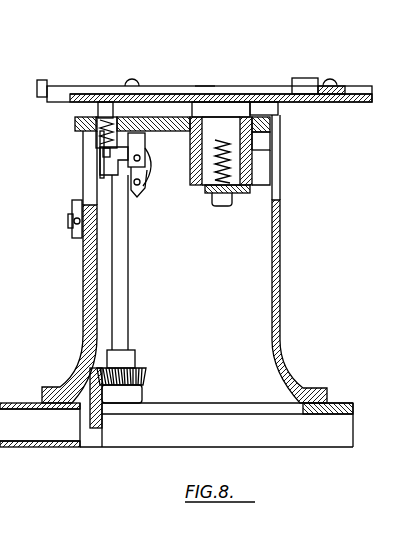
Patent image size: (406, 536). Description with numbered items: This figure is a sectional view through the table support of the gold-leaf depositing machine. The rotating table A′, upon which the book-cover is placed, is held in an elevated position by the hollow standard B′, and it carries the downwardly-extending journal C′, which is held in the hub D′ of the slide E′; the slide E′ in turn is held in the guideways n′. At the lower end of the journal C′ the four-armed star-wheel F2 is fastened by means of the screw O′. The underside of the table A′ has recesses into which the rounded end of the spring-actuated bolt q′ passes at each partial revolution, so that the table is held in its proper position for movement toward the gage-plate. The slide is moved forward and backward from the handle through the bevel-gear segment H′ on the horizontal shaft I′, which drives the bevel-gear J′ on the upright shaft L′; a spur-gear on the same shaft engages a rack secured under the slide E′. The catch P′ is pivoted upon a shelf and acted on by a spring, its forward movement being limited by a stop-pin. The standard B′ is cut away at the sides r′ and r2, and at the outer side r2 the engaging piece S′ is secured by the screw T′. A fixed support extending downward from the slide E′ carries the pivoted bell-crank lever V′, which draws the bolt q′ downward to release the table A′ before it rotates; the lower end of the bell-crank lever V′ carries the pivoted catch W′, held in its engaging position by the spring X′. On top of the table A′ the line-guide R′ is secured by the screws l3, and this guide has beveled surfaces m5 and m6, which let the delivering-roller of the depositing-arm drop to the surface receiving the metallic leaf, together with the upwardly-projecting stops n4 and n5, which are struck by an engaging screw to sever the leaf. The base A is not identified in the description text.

The beveled surface m6 is at (80, 92).
The rotating table A′ is at (173, 95).
The line-guide R′ is at (203, 88).
The upwardly-projecting stop n4 is at (42, 80).
The screw l3 is at (133, 79).
The upwardly-projecting stop n5 is at (300, 78).
The beveled surface m5 is at (310, 88).
The catch P′ is at (110, 102).
The spring-actuated bolt q′ is at (97, 108).
The pivoted catch W′ is at (140, 120).
The spring X′ is at (139, 168).
The bell-crank lever V′ is at (103, 173).
The upright shaft L′ is at (123, 291).
The bevel-gear J′ is at (145, 371).
The bevel-gear segment H′ is at (101, 427).
The cut-away side r2 is at (84, 187).
The engaging piece S′ is at (72, 210).
The screw T′ is at (70, 222).
The journal C′ is at (228, 127).
The slide E′ is at (258, 125).
The guideway n′ is at (273, 127).
The hub D′ is at (252, 165).
The four-armed star-wheel F2 is at (242, 193).
The screw O′ is at (223, 204).
The cut-away side r′ is at (275, 200).
The hollow standard B′ is at (281, 267).
The horizontal shaft I′ is at (33, 428).
The base A is at (336, 402).